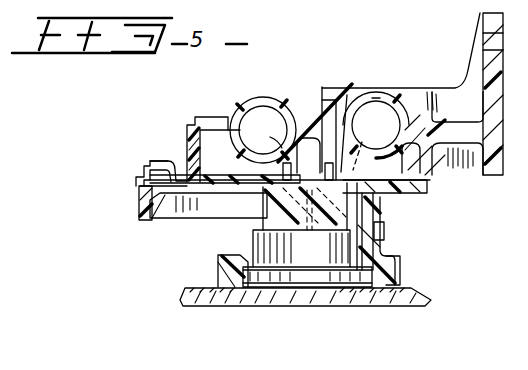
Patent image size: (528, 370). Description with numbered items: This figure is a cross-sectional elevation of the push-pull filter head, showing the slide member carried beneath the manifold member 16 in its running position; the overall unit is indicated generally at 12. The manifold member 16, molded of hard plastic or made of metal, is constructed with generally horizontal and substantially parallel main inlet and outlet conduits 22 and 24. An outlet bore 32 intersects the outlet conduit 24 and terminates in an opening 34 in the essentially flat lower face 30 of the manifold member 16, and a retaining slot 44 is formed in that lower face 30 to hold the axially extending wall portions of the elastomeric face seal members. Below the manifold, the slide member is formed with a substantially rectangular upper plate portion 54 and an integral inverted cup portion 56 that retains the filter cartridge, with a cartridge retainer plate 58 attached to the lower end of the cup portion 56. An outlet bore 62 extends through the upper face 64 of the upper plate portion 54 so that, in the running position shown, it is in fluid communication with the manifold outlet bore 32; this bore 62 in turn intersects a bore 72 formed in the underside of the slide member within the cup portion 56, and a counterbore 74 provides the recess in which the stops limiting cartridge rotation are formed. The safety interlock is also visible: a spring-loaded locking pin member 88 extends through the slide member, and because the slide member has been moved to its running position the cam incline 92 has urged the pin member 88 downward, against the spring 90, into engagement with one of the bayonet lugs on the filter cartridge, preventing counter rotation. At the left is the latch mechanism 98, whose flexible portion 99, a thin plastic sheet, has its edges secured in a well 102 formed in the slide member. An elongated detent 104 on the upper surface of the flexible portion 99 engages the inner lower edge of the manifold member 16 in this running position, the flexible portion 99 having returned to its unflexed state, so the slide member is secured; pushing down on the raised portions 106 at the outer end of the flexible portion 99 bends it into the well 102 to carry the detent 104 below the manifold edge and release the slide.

The actuator assembly 12 is at (102, 233).
The manifold member 16 is at (248, 97).
The main inlet conduit 22 is at (260, 108).
The main outlet conduit 24 is at (373, 103).
The lower face 30 is at (412, 94).
The outlet bore 32 is at (347, 95).
The opening 34 is at (374, 113).
The retaining slot 44 is at (267, 132).
The upper plate portion 54 is at (420, 197).
The cup portion 56 is at (217, 263).
The cartridge retainer plate 58 is at (421, 287).
The outlet bore 62 is at (378, 200).
The upper face 64 is at (417, 180).
The bore 72 is at (393, 263).
The counterbore 74 is at (245, 270).
The locking pin member 88 is at (364, 272).
The spring 90 is at (385, 226).
The cam incline 92 is at (370, 147).
The latch mechanism 98 is at (134, 169).
The flexible portion 99 is at (188, 190).
The well 102 is at (139, 188).
The detent 104 is at (238, 162).
The raised portions 106 is at (163, 168).